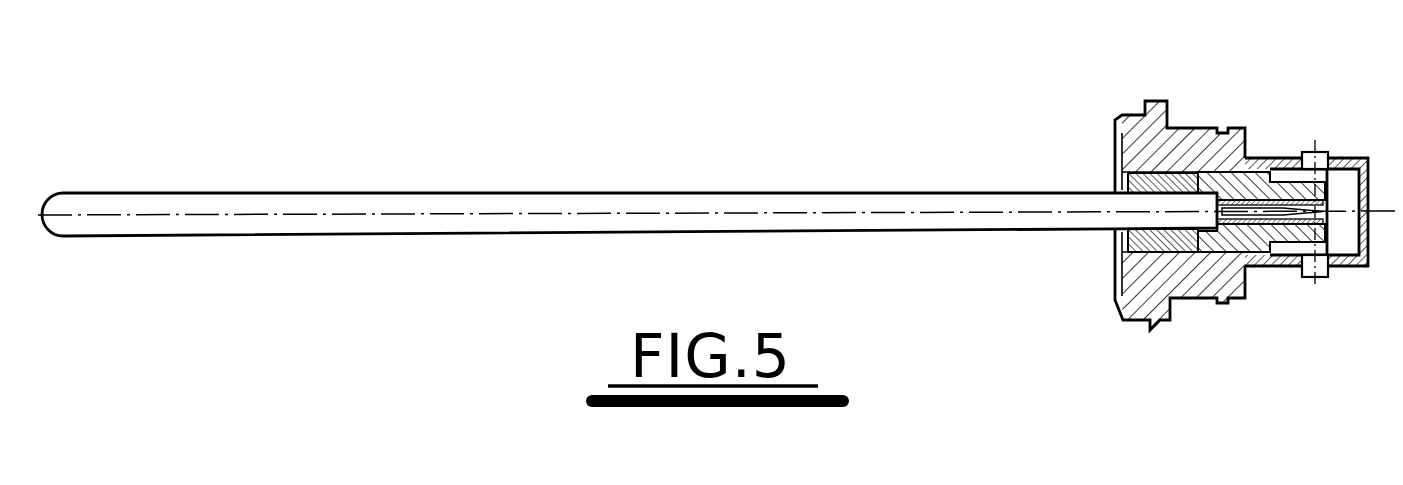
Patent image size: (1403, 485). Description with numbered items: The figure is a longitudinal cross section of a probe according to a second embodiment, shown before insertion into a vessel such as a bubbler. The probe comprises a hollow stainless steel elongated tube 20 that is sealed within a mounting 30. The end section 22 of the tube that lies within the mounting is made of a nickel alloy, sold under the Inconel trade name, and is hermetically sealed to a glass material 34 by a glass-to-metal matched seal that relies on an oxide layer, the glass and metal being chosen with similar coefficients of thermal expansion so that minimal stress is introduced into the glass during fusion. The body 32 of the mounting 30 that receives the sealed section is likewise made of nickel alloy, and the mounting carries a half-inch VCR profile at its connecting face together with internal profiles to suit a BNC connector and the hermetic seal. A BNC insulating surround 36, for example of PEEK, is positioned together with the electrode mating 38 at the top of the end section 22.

The elongated tube 20 is at (275, 237).
The end section 22 is at (1109, 218).
The mounting 30 is at (1221, 90).
The body 32 is at (1173, 285).
The glass material 34 is at (1163, 180).
The BNC insulating surround 36 is at (1253, 248).
The electrode mating 38 is at (1275, 210).